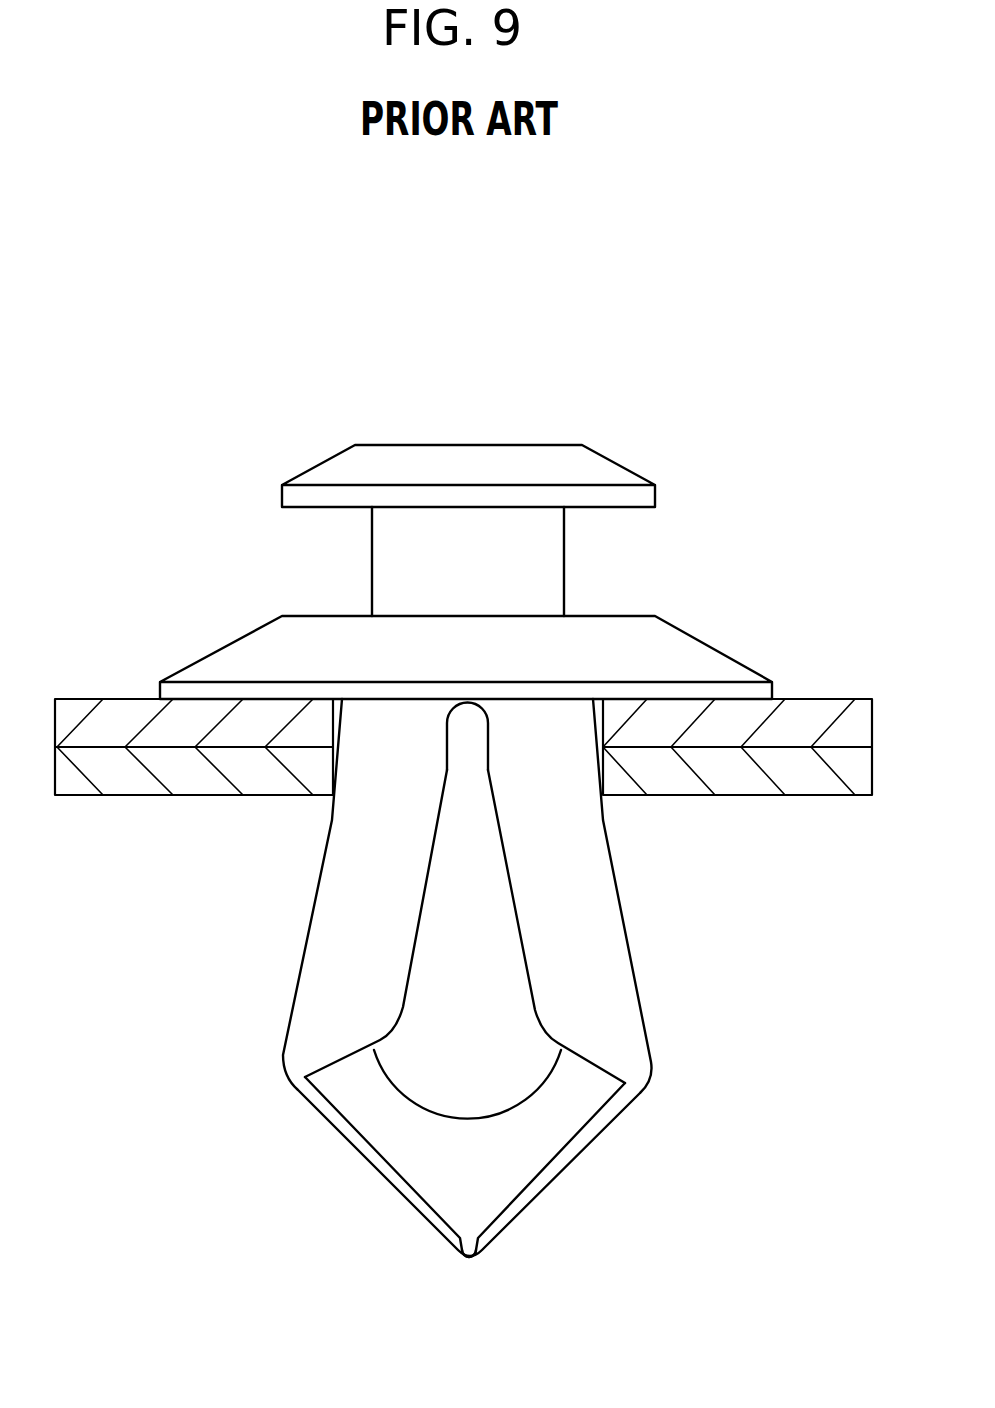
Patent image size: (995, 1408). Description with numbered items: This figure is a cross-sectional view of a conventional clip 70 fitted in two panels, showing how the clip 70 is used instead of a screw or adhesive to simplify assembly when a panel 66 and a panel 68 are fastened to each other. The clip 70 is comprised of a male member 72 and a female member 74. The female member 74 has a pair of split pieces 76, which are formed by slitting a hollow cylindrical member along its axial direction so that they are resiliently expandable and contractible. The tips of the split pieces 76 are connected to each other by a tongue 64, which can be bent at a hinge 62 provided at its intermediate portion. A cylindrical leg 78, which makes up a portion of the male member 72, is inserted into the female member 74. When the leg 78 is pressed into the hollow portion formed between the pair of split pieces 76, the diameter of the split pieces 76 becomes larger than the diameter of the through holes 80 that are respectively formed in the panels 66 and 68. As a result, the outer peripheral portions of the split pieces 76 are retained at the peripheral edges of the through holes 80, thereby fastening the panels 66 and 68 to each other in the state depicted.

The hinge 62 is at (466, 1263).
The tongue 64 is at (572, 1155).
The panel 66 is at (812, 718).
The panel 68 is at (820, 782).
The clip 70 is at (700, 587).
The male member 72 is at (353, 552).
The female member 74 is at (289, 902).
The split pieces 76 is at (312, 957).
The cylindrical leg 78 is at (497, 1003).
The through holes 80 is at (595, 752).